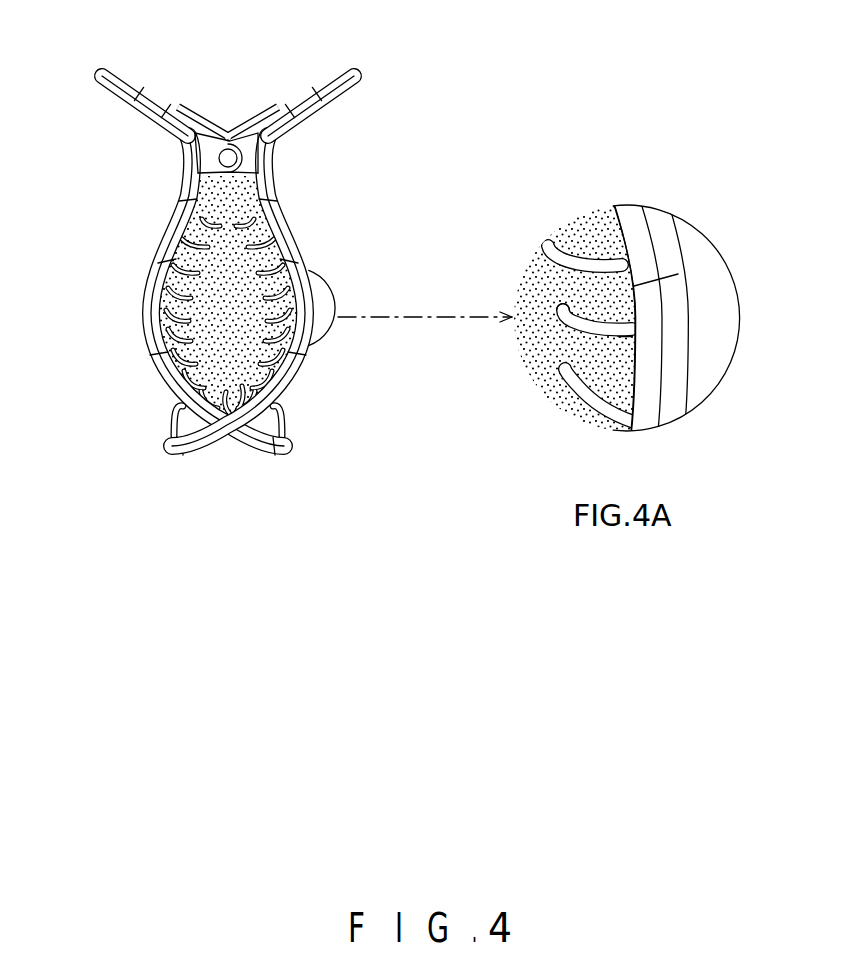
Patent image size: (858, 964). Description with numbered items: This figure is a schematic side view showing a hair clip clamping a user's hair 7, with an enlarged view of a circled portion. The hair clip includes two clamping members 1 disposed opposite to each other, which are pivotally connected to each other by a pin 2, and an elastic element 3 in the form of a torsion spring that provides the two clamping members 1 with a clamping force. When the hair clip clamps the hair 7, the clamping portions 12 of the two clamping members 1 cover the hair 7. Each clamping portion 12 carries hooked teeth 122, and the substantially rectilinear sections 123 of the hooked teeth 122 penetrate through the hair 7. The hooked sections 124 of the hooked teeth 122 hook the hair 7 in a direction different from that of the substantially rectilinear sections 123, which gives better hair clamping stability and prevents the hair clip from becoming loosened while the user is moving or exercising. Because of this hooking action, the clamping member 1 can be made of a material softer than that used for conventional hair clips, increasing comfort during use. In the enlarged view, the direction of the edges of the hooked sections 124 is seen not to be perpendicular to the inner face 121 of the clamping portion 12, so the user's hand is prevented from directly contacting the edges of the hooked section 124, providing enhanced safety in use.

In FIG. 4, the clamping member 1 is at (212, 265).
In FIG. 4, the pin 2 is at (230, 148).
In FIG. 4, the elastic element 3 is at (206, 133).
In FIG. 4, the hair 7 is at (215, 300).
In FIG. 4A, the hair 7 is at (545, 284).
In FIG. 4, the clamping portion 12 is at (123, 330).
In FIG. 4A, the clamping portion 12 is at (725, 320).
In FIG. 4A, the inner face 121 is at (638, 360).
In FIG. 4A, the hooked tooth 122 is at (553, 396).
In FIG. 4A, the substantially rectilinear section 123 is at (620, 337).
In FIG. 4A, the hooked section 124 is at (563, 312).